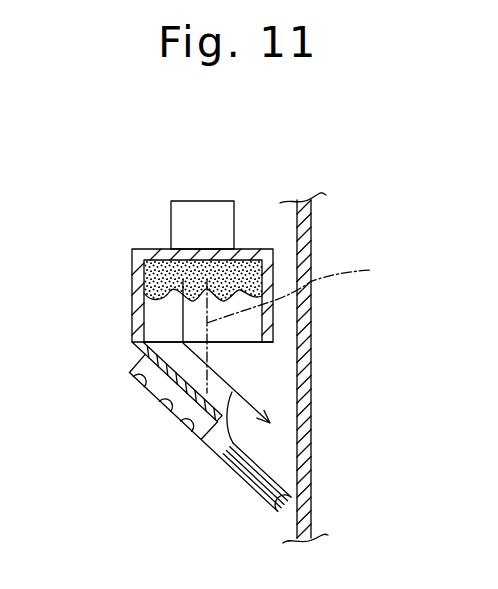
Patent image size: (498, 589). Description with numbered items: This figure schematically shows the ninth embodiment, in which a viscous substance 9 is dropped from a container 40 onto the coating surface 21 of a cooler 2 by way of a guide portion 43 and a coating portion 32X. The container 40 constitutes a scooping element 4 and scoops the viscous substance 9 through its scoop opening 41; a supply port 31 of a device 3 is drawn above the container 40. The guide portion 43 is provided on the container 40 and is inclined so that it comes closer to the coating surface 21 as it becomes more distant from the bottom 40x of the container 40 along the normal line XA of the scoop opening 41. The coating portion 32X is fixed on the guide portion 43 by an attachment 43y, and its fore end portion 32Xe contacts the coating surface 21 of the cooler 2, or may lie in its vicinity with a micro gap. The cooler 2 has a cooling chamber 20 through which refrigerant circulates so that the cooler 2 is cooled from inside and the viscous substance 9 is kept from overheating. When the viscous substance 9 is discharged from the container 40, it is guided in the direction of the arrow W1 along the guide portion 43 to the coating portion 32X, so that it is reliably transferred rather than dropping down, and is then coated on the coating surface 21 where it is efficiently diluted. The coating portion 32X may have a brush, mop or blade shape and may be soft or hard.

The cooler 2 is at (348, 368).
The cooling chamber 20 is at (337, 305).
The coating surface 21 is at (301, 403).
The developing device 3 is at (186, 186).
The toner supply port 31 is at (170, 202).
The scooping element 4 is at (112, 271).
The container 40 is at (140, 318).
The bottom of the container 40x is at (242, 243).
The scoop opening 41 is at (243, 343).
The guide portion 43 is at (155, 432).
The attachment 43y is at (140, 392).
The viscous substance 9 is at (216, 272).
The normal line of the scoop opening XA is at (308, 326).
The arrow W1 is at (230, 447).
The coating portion 32X is at (323, 482).
The fore end portion of the coating portion 32Xe is at (300, 490).